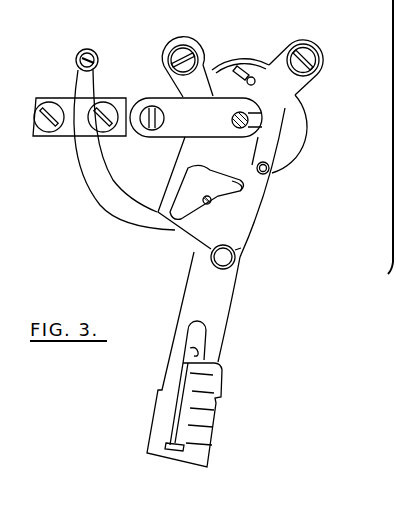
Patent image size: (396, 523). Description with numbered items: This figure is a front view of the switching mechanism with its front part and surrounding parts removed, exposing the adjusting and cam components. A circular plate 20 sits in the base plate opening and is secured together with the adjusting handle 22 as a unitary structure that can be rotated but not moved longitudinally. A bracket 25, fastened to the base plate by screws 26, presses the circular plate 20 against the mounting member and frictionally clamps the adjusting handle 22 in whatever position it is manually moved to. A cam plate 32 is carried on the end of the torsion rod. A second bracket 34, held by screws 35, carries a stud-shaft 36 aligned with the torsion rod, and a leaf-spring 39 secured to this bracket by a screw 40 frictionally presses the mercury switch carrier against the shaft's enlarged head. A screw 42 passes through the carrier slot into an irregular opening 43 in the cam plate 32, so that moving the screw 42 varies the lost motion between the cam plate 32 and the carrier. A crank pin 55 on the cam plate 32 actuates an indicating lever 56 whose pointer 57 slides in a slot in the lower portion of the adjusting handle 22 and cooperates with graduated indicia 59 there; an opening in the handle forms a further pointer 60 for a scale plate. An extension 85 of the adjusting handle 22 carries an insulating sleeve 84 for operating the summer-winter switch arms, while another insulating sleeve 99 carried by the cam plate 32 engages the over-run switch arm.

The circular plate 20 is at (295, 121).
The adjusting handle 22 is at (194, 290).
The bracket 25 is at (299, 87).
The screws 26 is at (189, 48).
The cam plate 32 is at (266, 192).
The bracket 34 is at (131, 104).
The screws 35 is at (50, 129).
The stud-shaft 36 is at (250, 122).
The leaf-spring 39 is at (196, 117).
The screw 40 is at (154, 130).
The screw 42 is at (203, 201).
The irregular opening 43 is at (233, 191).
The crank pin 55 is at (270, 172).
The indicating lever 56 is at (235, 279).
The pointer 57 is at (170, 449).
The indicia 59 is at (214, 419).
The pointer 60 is at (190, 353).
The insulating sleeve 84 is at (98, 55).
The extension 85 is at (107, 196).
The insulating sleeve 99 is at (237, 258).